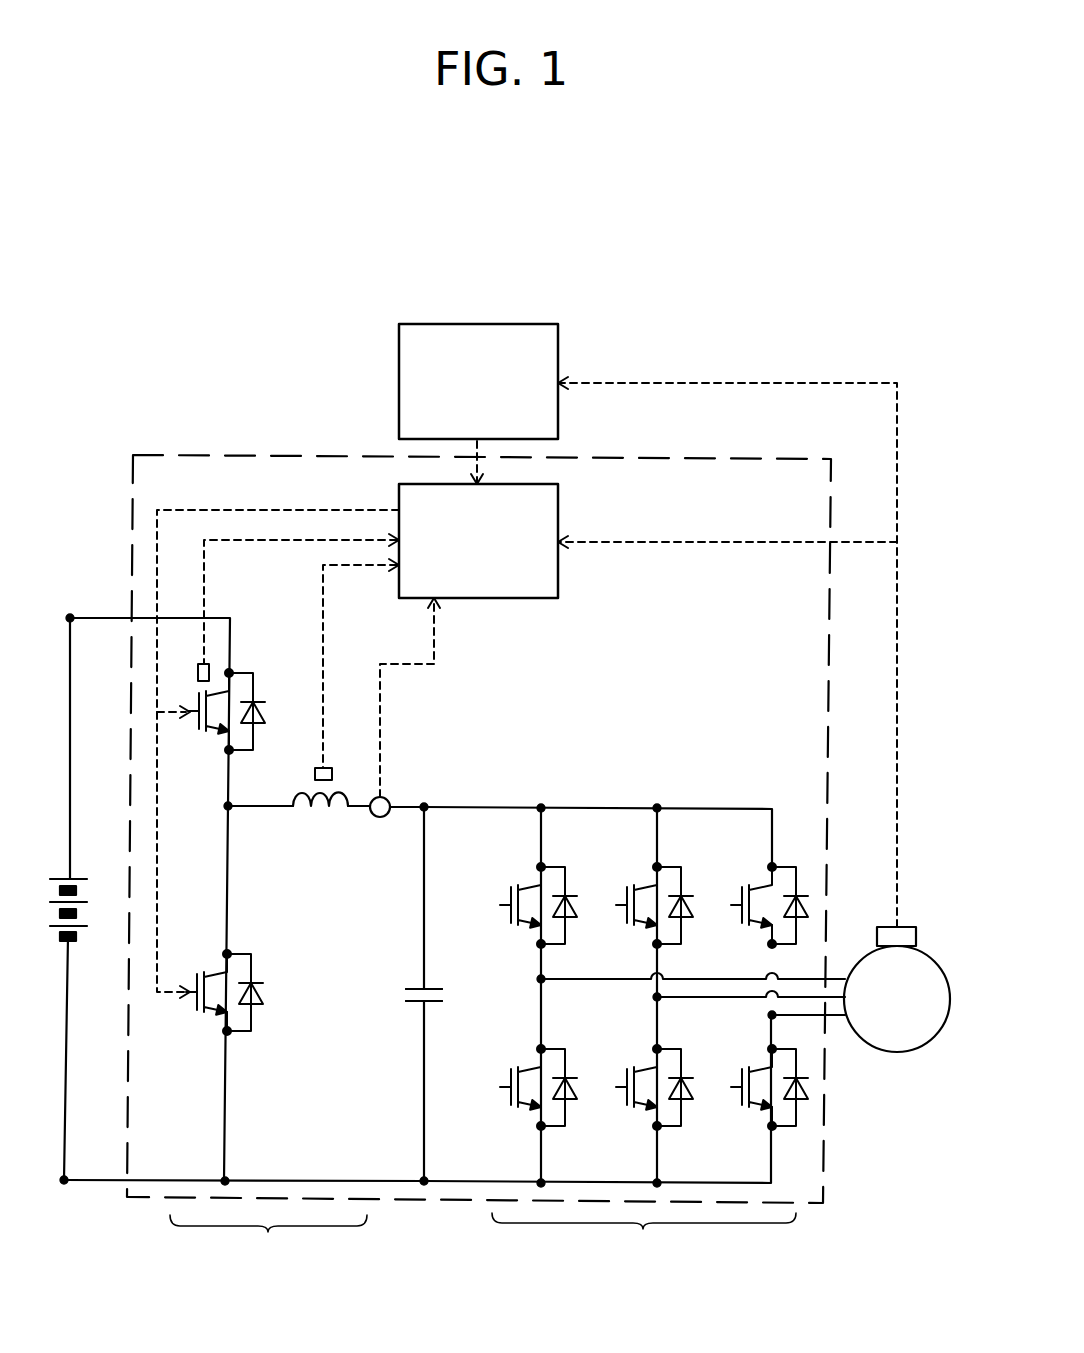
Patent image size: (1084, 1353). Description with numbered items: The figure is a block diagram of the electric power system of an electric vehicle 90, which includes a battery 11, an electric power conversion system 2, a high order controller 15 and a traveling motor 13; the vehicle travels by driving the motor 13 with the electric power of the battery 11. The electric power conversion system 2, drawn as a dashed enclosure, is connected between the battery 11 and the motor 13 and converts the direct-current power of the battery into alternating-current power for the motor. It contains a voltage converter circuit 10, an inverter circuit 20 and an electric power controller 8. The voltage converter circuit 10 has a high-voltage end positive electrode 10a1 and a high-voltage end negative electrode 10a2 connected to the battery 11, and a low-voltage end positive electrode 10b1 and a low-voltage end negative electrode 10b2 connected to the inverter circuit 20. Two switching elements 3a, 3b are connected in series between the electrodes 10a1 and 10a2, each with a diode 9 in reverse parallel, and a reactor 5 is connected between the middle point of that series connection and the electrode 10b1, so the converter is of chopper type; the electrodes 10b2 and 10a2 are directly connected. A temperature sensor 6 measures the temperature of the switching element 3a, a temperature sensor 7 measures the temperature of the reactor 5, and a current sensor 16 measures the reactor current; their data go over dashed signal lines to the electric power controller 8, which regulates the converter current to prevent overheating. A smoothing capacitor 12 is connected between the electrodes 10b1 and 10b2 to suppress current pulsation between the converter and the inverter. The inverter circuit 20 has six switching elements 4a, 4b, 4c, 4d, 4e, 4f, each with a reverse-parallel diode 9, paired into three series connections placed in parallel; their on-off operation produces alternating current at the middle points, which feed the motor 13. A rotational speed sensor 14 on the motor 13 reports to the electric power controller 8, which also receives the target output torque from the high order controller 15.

The electric vehicle 90 is at (782, 246).
The electric power conversion system 2 is at (232, 452).
The high order controller 15 is at (399, 350).
The electric power controller 8 is at (477, 599).
The high-voltage end positive electrode 10a1 is at (70, 613).
The high-voltage end negative electrode 10a2 is at (64, 1186).
The low-voltage end positive electrode 10b1 is at (424, 803).
The low-voltage end negative electrode 10b2 is at (420, 1186).
The battery 11 is at (72, 878).
The temperature sensor 6 is at (201, 664).
The temperature sensor 7 is at (330, 768).
The switching element 3a is at (203, 727).
The switching element 3b is at (196, 1007).
The reactor 5 is at (318, 818).
The current sensor 16 is at (377, 818).
The smoothing capacitor 12 is at (408, 1003).
The diode 9 is at (258, 702).
The switching element 4a is at (505, 898).
The switching element 4b is at (503, 1078).
The switching element 4c is at (620, 898).
The switching element 4d is at (618, 1078).
The switching element 4e is at (735, 898).
The switching element 4f is at (734, 1078).
The motor 13 is at (893, 1053).
The rotational speed sensor 14 is at (907, 927).
The voltage converter circuit 10 is at (268, 1237).
The inverter circuit 20 is at (644, 1236).